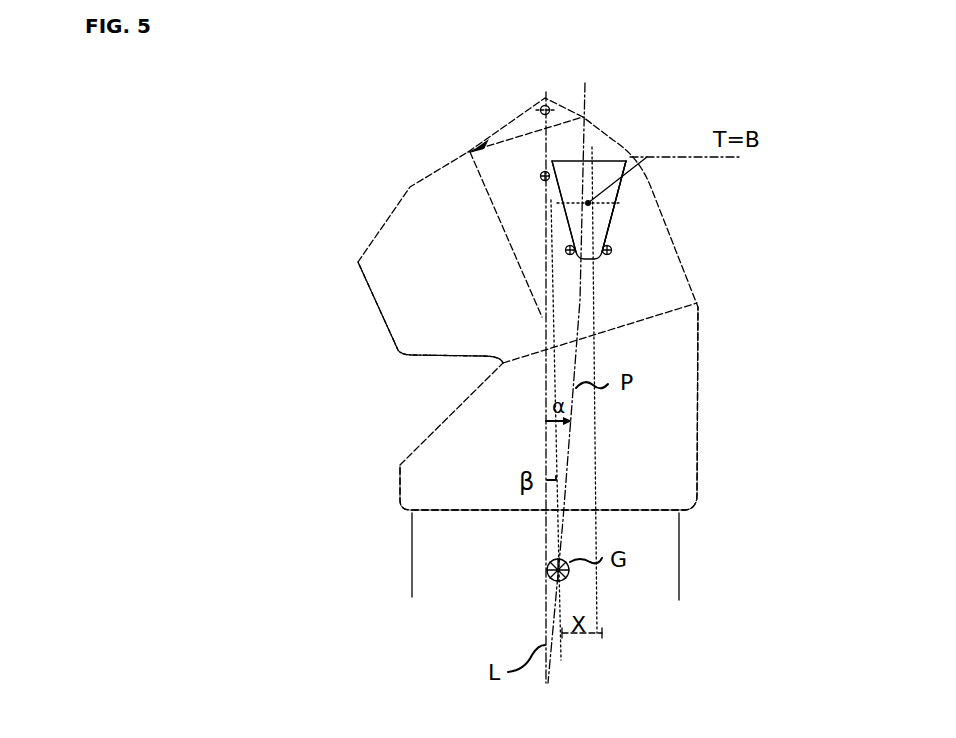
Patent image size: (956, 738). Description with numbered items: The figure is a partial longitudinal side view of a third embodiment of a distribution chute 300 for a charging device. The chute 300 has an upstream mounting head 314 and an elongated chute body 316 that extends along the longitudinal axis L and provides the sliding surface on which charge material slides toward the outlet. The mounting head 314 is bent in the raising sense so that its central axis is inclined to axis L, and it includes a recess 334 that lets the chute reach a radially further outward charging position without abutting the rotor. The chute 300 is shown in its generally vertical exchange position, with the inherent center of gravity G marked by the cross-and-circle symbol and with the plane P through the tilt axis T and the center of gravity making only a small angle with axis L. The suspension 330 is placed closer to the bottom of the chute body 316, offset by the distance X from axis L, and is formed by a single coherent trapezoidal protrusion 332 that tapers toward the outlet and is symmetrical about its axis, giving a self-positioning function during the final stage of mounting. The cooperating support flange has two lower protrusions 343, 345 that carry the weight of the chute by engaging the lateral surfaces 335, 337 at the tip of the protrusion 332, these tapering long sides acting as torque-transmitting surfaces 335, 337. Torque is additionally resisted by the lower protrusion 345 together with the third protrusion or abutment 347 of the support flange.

The distribution chute 300 is at (320, 253).
The mounting head 314 is at (683, 448).
The chute body 316 is at (667, 563).
The suspension 330 is at (613, 156).
The trapezoidal protrusion 332 is at (608, 223).
The recess 334 is at (478, 393).
The torque-transmitting surface 335 is at (615, 243).
The torque-transmitting surface 337 is at (562, 230).
The lower protrusion 343 is at (572, 256).
The lower protrusion 345 is at (609, 255).
The abutment 347 is at (543, 173).